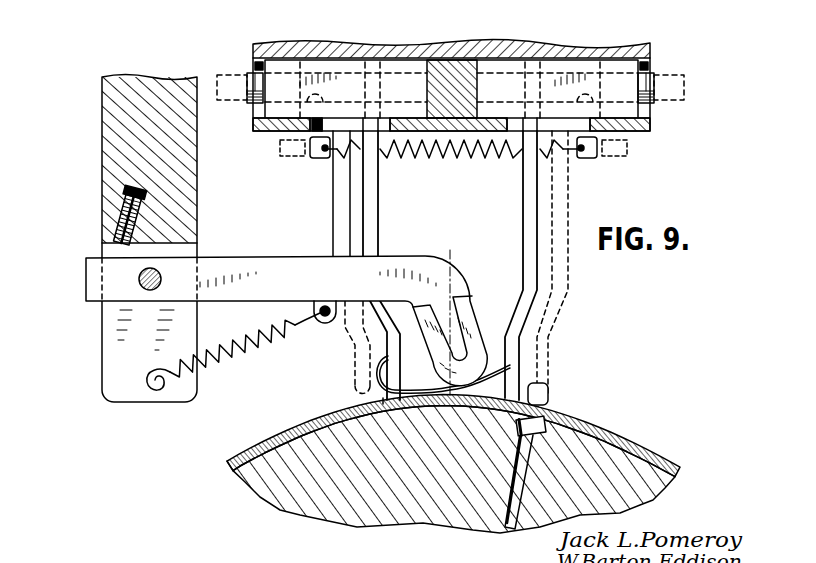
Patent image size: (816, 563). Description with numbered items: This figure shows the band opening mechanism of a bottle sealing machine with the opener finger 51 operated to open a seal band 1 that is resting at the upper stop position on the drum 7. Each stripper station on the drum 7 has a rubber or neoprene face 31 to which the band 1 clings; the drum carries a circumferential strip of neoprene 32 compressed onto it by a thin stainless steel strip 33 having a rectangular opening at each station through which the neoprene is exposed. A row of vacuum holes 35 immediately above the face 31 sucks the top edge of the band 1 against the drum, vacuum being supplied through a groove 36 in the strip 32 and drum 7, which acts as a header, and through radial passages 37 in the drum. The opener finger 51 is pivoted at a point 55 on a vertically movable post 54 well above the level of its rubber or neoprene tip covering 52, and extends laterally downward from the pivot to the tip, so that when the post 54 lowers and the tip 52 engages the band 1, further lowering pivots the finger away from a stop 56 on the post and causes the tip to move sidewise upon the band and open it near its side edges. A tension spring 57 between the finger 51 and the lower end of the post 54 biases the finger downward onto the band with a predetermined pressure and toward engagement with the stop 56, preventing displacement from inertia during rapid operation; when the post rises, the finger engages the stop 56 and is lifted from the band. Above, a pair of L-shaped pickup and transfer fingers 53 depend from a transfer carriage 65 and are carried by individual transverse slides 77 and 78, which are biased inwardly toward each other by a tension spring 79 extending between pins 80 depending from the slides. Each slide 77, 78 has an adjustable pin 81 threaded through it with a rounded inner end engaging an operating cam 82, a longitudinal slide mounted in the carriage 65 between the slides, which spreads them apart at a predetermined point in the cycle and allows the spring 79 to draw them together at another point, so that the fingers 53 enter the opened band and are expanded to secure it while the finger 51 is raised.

The seal band 1 is at (523, 369).
The drum 7 is at (263, 500).
The rubber or neoprene face 31 is at (383, 398).
The circumferential strip of neoprene 32 is at (228, 463).
The thin stainless steel strip 33 is at (274, 436).
The vacuum holes 35 is at (549, 403).
The groove 36 is at (560, 421).
The radial passages 37 is at (506, 530).
The opener finger 51 is at (432, 272).
The rubber or neoprene tip covering 52 is at (467, 327).
The pickup and transfer fingers 53 is at (385, 345).
The vertically movable post 54 is at (100, 152).
The pivot point 55 is at (143, 286).
The stop 56 is at (114, 237).
The tension spring 57 is at (258, 348).
The transfer carriage 65 is at (641, 50).
The transverse slide 77 is at (277, 110).
The transverse slide 78 is at (636, 123).
The tension spring 79 is at (455, 160).
The pins 80 is at (320, 158).
The adjustable pin 81 is at (247, 86).
The operating cam 82 is at (455, 80).